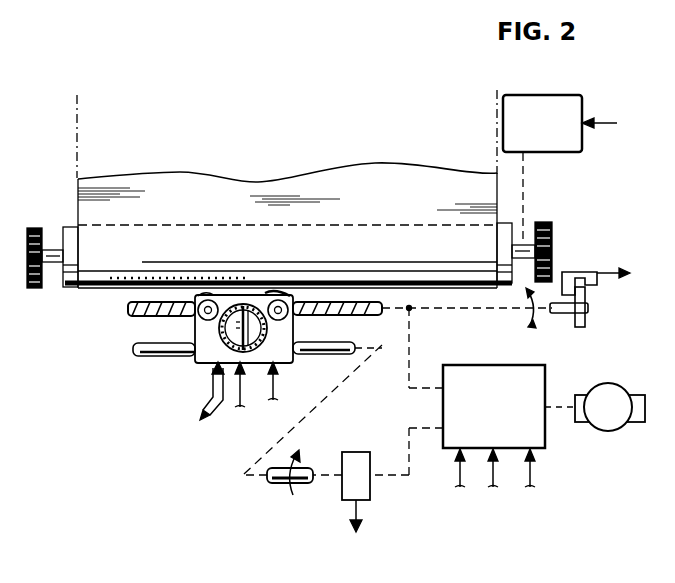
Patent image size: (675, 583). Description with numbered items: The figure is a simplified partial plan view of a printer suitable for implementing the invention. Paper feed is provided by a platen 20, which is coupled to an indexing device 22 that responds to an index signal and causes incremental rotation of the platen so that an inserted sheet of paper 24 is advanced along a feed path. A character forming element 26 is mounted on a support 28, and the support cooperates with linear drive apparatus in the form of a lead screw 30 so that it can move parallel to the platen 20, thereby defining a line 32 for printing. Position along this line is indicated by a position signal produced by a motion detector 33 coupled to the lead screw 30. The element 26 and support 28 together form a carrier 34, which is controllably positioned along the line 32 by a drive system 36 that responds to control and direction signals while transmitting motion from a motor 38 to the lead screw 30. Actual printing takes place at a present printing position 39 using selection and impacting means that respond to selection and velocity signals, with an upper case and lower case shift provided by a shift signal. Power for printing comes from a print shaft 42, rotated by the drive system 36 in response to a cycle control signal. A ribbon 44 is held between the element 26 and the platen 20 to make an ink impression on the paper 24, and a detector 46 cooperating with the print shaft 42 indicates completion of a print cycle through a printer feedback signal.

The platen 20 is at (70, 228).
The indexing device 22 is at (550, 100).
The sheet of paper 24 is at (290, 180).
The character forming element 26 is at (230, 337).
The support 28 is at (291, 358).
The lead screw 30 is at (130, 318).
The line 32 is at (124, 278).
The motion detector 33 is at (596, 306).
The carrier 34 is at (303, 332).
The drive system 36 is at (540, 376).
The motor 38 is at (610, 428).
The present printing position 39 is at (246, 300).
The print shaft 42 is at (140, 356).
The ribbon 44 is at (280, 296).
The detector 46 is at (355, 452).